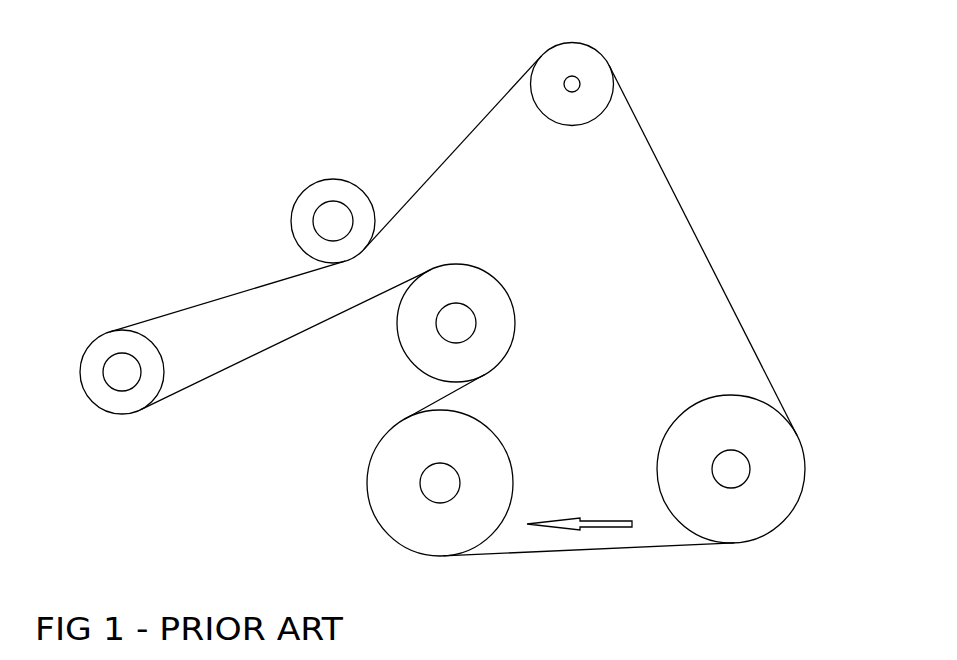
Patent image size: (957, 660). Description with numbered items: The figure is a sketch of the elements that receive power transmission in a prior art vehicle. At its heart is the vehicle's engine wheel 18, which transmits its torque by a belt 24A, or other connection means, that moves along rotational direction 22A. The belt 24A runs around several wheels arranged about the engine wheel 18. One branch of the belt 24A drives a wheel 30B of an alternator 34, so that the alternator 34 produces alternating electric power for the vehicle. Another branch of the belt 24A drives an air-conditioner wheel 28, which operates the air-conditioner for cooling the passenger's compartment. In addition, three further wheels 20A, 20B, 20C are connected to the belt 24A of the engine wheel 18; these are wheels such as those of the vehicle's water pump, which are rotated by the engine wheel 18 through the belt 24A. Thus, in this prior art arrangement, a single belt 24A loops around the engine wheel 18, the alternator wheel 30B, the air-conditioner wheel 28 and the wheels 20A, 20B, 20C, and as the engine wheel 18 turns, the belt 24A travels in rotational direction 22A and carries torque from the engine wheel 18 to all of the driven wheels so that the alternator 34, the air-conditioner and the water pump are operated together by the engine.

The engine wheel 18 is at (385, 503).
The wheel 20A is at (408, 330).
The wheel 20B is at (322, 193).
The wheel 20C is at (97, 390).
The rotational direction 22A is at (579, 512).
The belt 24A is at (700, 239).
The air-conditioner wheel 28 is at (773, 450).
The wheel of alternator 30B is at (582, 126).
The alternator 34 is at (558, 98).